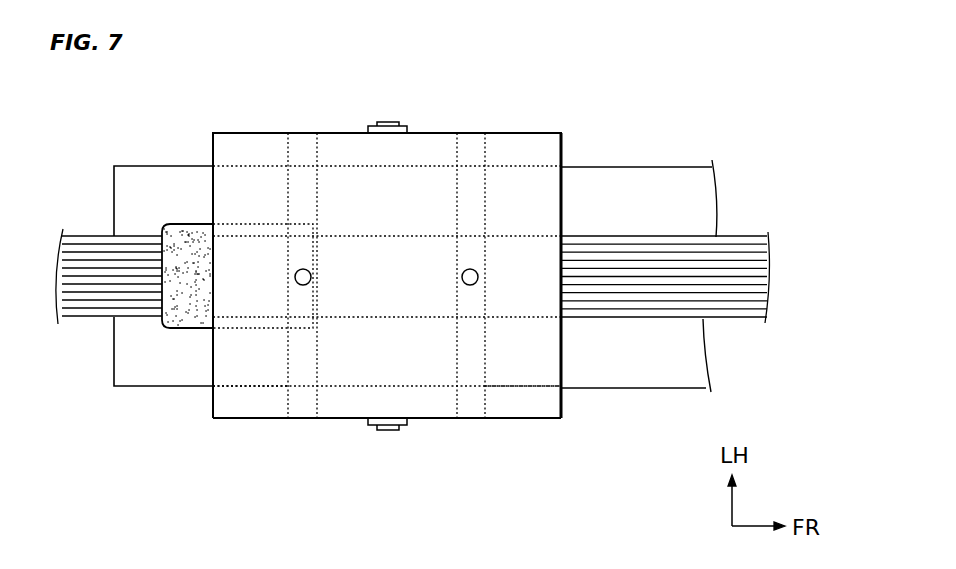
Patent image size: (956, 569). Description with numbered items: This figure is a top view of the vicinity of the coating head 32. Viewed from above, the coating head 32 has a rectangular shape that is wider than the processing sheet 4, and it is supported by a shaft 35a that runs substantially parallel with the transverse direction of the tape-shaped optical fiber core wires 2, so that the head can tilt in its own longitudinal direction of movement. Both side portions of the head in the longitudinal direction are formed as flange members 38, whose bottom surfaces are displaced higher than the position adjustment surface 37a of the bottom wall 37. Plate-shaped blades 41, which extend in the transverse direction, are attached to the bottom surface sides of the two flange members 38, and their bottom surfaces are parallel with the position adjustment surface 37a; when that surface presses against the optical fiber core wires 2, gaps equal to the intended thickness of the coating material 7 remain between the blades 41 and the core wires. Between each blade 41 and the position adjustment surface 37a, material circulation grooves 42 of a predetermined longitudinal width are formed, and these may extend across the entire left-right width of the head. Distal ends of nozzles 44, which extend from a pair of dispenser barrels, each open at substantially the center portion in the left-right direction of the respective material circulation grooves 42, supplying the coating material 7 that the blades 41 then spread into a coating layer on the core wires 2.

The optical fiber core wires 2 is at (653, 254).
The processing sheet 4 is at (643, 167).
The coating material 7 is at (188, 223).
The coating head 32 is at (548, 133).
The shaft 35a is at (388, 122).
The bottom wall 37 is at (440, 410).
The position adjustment surface 37a is at (387, 465).
The flange members 38 is at (213, 370).
The blades 41 is at (415, 452).
The material circulation grooves 42 is at (303, 397).
The nozzles 44 is at (312, 275).